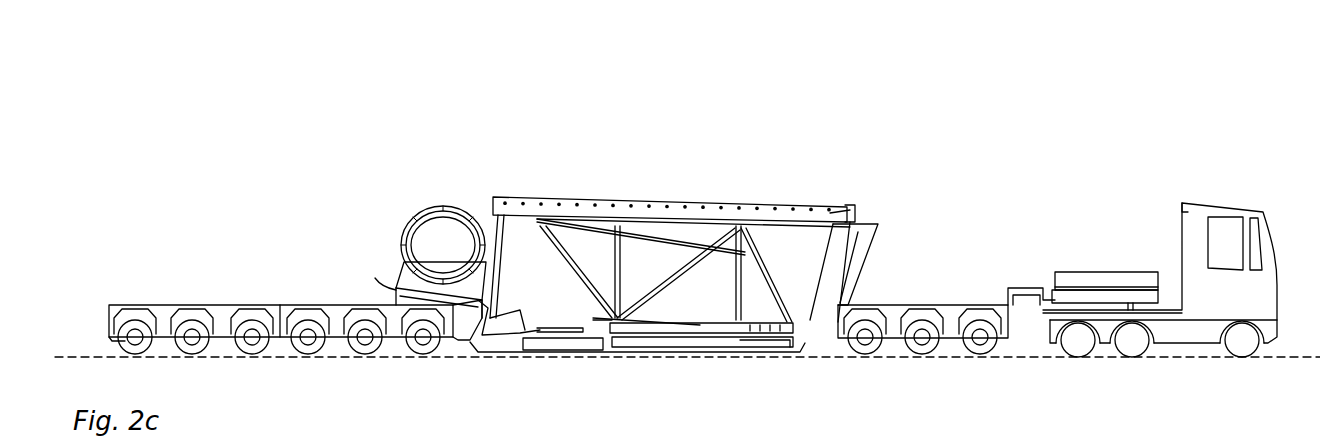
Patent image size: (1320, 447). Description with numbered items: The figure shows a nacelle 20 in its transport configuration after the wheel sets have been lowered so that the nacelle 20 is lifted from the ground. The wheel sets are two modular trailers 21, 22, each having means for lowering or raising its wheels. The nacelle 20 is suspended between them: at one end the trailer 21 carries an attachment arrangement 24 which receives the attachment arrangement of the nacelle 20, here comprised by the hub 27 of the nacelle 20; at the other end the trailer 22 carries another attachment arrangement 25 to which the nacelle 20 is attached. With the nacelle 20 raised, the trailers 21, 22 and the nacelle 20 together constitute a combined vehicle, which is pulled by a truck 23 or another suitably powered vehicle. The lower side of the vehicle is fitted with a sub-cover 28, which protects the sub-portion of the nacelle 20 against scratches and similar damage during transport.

The nacelle 20 is at (675, 198).
The trailer 21 is at (253, 304).
The trailer 22 is at (952, 305).
The truck 23 is at (1215, 204).
The attachment arrangement 24 is at (392, 298).
The attachment arrangement 25 is at (866, 258).
The hub 27 is at (403, 223).
The sub-cover 28 is at (760, 353).